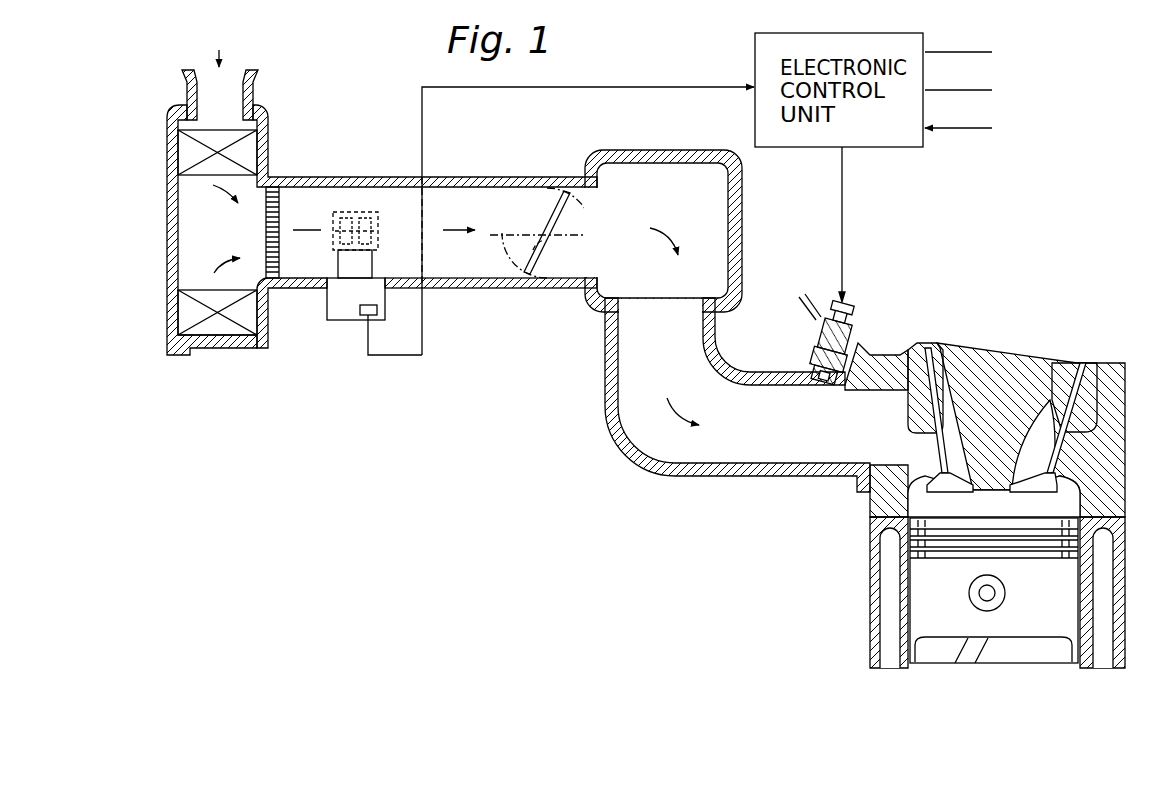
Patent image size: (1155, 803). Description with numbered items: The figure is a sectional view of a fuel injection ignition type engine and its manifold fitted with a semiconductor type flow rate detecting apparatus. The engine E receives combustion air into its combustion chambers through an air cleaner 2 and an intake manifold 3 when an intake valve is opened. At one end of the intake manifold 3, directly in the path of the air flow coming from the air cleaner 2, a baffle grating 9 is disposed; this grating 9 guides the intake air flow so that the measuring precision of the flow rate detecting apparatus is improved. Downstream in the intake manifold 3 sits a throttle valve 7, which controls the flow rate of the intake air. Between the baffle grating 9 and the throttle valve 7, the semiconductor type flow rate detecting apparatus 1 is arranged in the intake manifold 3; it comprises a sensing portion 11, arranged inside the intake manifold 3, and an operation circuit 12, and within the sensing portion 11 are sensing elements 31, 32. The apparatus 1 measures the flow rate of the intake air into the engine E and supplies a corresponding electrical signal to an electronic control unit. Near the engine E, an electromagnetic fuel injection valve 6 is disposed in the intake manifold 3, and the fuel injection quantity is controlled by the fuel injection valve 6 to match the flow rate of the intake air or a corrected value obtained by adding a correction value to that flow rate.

The semiconductor type flow rate detecting apparatus 1 is at (356, 266).
The air cleaner 2 is at (170, 325).
The intake manifold 3 is at (479, 290).
The electromagnetic fuel injection valve 6 is at (846, 330).
The throttle valve 7 is at (556, 211).
The baffle grating 9 is at (272, 265).
The sensing portion 11 is at (352, 197).
The operation circuit 12 is at (337, 305).
The first sensing element 31 is at (334, 222).
The second sensing element 32 is at (368, 216).
The engine E is at (868, 610).